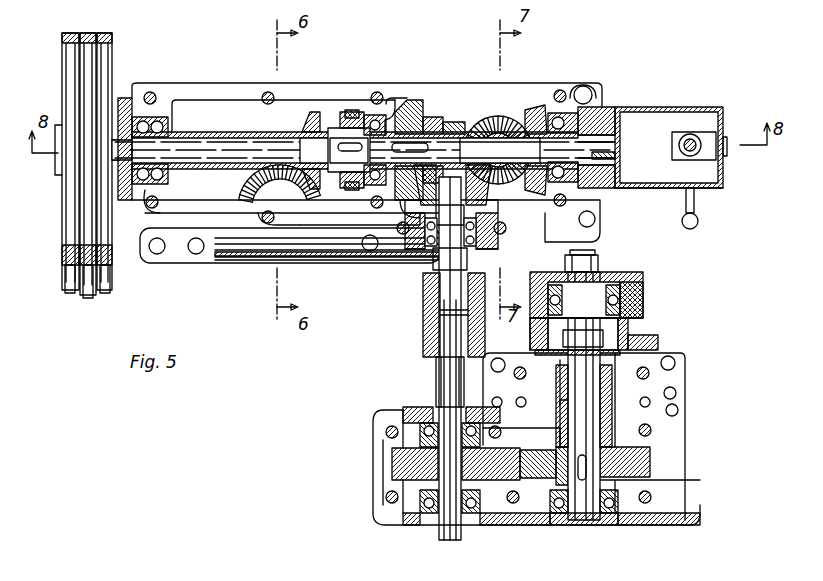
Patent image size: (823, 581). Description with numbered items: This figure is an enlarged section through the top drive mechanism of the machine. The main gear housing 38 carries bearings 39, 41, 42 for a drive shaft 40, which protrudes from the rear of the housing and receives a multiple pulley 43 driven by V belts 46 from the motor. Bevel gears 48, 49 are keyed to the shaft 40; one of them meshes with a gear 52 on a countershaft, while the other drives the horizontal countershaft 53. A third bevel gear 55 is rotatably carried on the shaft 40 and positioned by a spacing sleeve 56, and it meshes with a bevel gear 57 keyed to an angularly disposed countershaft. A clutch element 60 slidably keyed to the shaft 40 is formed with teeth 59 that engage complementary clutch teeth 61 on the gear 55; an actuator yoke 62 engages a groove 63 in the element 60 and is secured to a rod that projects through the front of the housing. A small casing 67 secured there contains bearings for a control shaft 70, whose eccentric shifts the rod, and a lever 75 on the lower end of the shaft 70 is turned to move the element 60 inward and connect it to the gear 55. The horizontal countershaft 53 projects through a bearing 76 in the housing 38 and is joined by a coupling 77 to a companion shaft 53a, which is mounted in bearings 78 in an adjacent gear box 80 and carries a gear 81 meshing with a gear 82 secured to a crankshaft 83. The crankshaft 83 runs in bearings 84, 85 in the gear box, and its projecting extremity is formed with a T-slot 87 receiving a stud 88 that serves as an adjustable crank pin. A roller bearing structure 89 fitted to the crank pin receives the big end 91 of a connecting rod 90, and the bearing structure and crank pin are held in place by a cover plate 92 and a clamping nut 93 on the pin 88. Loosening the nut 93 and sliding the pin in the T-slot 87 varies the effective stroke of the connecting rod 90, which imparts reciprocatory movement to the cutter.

The main gear housing 38 is at (200, 264).
The bearing 39 is at (160, 117).
The drive shaft 40 is at (207, 140).
The bearing 41 is at (360, 200).
The bearing 42 is at (580, 95).
The multiple pulley 43 is at (62, 252).
The V belts 46 is at (84, 300).
The bevel gear 48 is at (440, 117).
The bevel gear 49 is at (538, 105).
The gear 52 is at (498, 116).
The horizontal countershaft 53 is at (436, 268).
The companion shaft 53a is at (436, 384).
The third bevel gear 55 is at (310, 112).
The spacing sleeve 56 is at (250, 140).
The bevel gear 57 is at (250, 188).
The teeth 59 is at (350, 112).
The clutch element 60 is at (412, 100).
The clutch teeth 61 is at (330, 128).
The actuator yoke 62 is at (355, 110).
The groove 63 is at (378, 115).
The small casing 67 is at (700, 192).
The control shaft 70 is at (701, 140).
The lever 75 is at (698, 221).
The bearing 76 is at (400, 256).
The coupling 77 is at (423, 340).
The bearings 78 is at (403, 408).
The gear box 80 is at (372, 448).
The gear 81 is at (392, 470).
The gear 82 is at (650, 470).
The crankshaft 83 is at (578, 405).
The bearing 84 is at (622, 525).
The bearing 85 is at (688, 372).
The T-slot 87 is at (658, 340).
The stud 88 is at (600, 332).
The roller bearing structure 89 is at (625, 308).
The connecting rod 90 is at (648, 300).
The big end 91 is at (645, 293).
The cover plate 92 is at (633, 272).
The clamping nut 93 is at (600, 262).